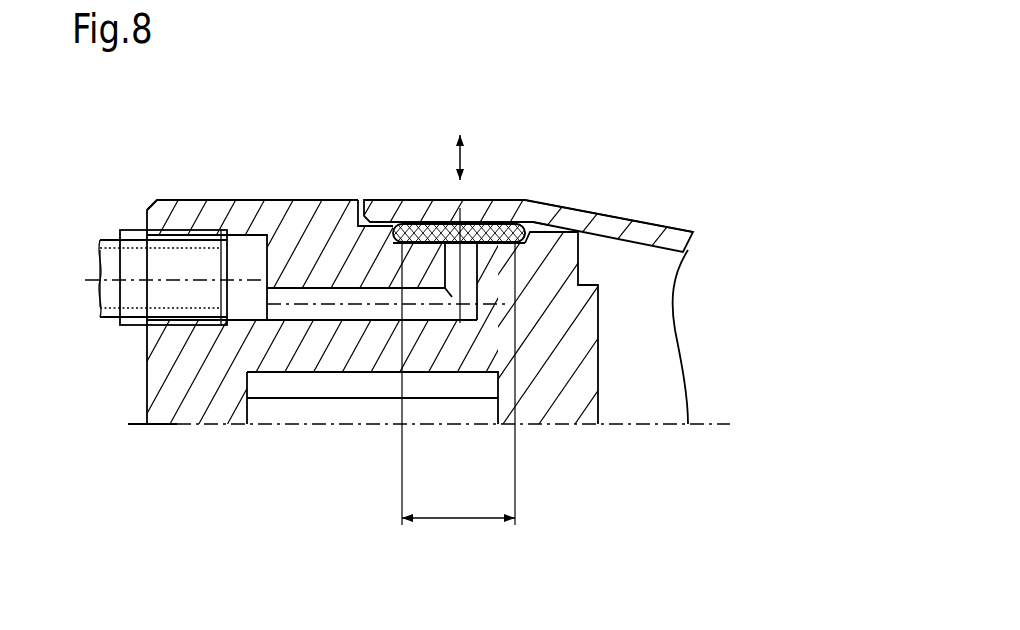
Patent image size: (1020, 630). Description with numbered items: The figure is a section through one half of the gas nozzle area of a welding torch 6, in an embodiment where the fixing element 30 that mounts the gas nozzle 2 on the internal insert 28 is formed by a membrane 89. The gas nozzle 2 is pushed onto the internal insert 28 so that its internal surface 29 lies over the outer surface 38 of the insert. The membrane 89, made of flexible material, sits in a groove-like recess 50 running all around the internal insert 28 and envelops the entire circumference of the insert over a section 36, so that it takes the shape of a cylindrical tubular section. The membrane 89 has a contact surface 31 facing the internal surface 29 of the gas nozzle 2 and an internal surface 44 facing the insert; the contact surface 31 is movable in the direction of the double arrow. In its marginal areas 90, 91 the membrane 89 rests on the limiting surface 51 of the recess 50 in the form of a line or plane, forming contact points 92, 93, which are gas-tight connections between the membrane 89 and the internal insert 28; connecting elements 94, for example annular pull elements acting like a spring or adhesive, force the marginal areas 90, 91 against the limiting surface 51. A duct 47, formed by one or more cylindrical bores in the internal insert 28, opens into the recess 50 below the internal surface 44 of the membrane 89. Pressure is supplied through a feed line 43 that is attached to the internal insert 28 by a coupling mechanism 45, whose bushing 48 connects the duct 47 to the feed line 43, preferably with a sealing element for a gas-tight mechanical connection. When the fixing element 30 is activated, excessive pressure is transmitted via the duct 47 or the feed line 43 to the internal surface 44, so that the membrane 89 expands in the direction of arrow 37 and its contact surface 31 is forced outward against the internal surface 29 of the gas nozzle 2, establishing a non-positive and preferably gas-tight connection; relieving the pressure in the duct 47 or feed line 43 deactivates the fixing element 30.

The gas nozzle 2 is at (668, 208).
The welding torch 6 is at (683, 493).
The internal insert 28 is at (298, 176).
The internal surface 29 is at (305, 228).
The fixing element 30 is at (547, 245).
The contact surface 31 is at (460, 208).
The section 36 is at (460, 518).
The arrow 37 is at (488, 315).
The outer surface 38 is at (191, 198).
The feed line 43 is at (113, 244).
The internal surface 44 is at (466, 262).
The coupling mechanism 45 is at (103, 341).
The duct 47 is at (319, 317).
The bushing 48 is at (135, 297).
The recess 50 is at (521, 222).
The limiting surface 51 is at (438, 222).
The membrane 89 is at (478, 222).
The marginal area 90 is at (380, 233).
The marginal area 91 is at (683, 248).
The contact point 92 is at (402, 243).
The contact point 93 is at (518, 245).
The connecting elements 94 is at (402, 222).